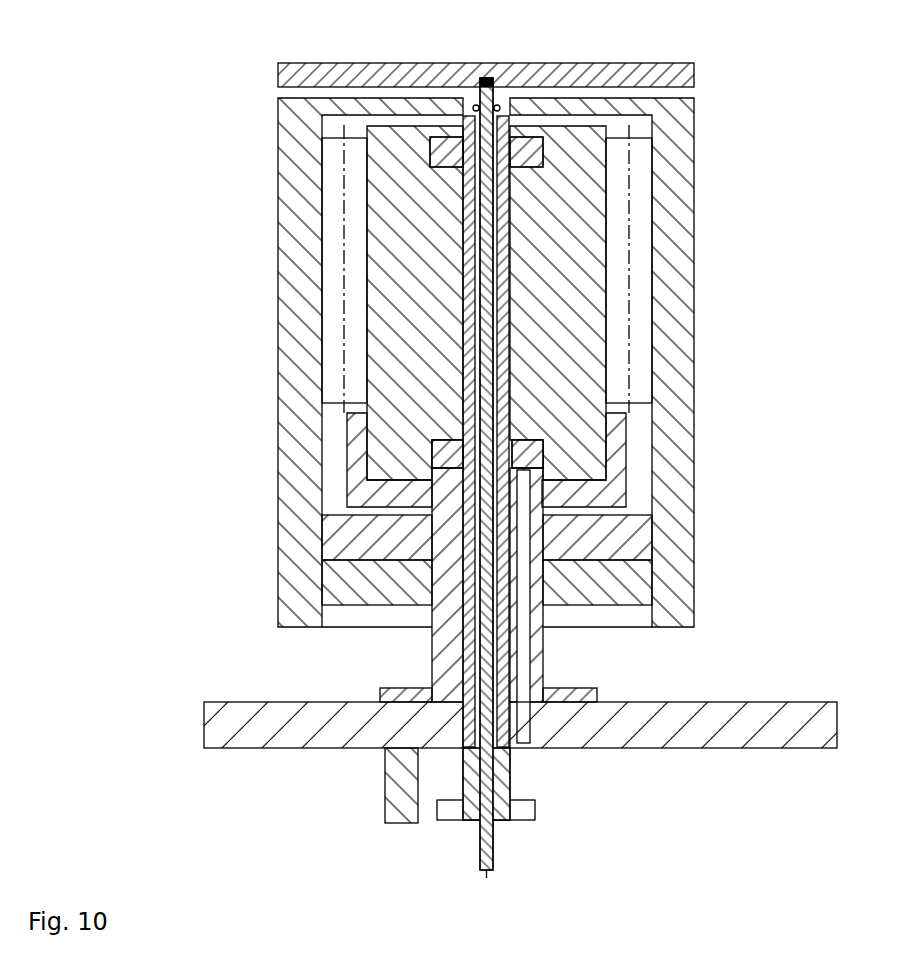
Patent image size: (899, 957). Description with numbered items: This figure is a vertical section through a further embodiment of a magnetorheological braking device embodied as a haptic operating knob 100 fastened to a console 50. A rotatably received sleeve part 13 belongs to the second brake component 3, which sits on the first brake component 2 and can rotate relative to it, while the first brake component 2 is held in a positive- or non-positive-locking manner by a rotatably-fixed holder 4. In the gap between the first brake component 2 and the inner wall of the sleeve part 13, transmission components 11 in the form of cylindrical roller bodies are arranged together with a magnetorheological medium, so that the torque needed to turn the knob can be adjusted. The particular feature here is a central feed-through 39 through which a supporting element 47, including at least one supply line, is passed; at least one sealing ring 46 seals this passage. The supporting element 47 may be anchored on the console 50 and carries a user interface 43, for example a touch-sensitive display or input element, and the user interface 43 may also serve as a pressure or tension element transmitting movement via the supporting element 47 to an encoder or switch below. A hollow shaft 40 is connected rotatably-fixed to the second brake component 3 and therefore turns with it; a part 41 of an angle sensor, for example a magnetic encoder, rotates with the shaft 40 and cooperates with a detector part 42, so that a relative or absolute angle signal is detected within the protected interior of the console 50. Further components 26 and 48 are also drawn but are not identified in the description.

The haptic operating knob 100 is at (716, 65).
The user interface 43 is at (316, 66).
The second brake component 3 is at (267, 335).
The sleeve part 13 is at (290, 144).
The transmission components 11 is at (328, 233).
The first brake component 2 is at (383, 297).
The bearing 26 is at (439, 152).
The holder 4 is at (440, 663).
The rod 48 is at (497, 769).
The console 50 is at (797, 712).
The part of an angle sensor 42 is at (393, 795).
The central feed-through 39 is at (506, 836).
The part of an angle sensor 41 is at (458, 812).
The shaft 40 is at (510, 784).
The supporting element 47 is at (482, 90).
The sealing ring 46 is at (499, 107).